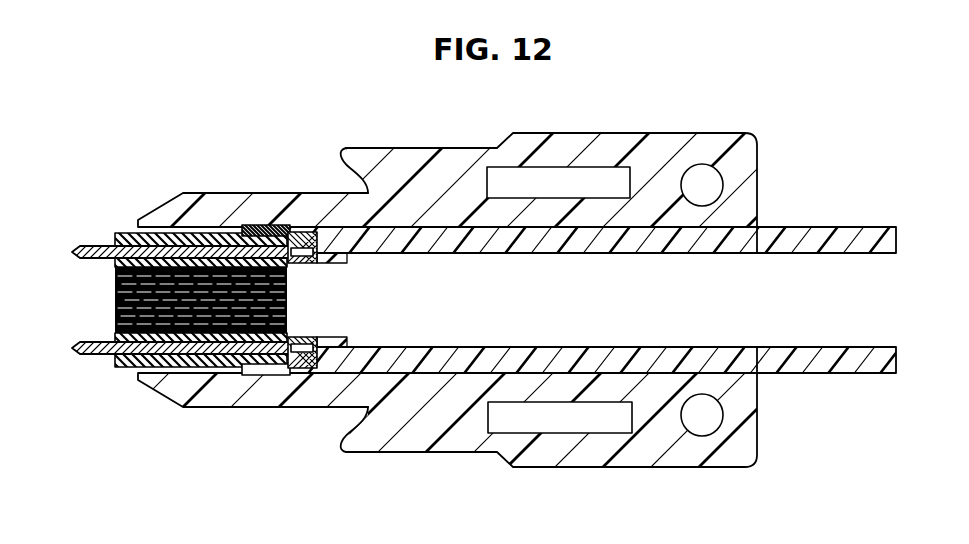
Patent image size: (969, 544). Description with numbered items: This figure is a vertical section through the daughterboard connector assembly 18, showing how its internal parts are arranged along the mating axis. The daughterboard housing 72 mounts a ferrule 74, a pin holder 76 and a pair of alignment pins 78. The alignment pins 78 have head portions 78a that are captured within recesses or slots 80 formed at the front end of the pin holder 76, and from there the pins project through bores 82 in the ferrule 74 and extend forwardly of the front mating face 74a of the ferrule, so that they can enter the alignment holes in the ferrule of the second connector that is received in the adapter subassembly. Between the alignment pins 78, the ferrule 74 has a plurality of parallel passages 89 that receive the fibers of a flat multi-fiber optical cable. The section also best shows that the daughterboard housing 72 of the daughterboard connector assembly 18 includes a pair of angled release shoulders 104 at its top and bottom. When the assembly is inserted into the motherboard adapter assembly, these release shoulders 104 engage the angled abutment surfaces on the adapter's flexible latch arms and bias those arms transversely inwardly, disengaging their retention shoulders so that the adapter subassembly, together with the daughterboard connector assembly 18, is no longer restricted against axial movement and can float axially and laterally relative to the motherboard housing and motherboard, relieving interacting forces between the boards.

The daughterboard connector assembly 18 is at (637, 126).
The daughterboard housing 72 is at (635, 457).
The ferrule 74 is at (158, 236).
The front mating face 74a is at (115, 320).
The pin holder 76 is at (765, 238).
The alignment pins 78 is at (207, 237).
The head portions 78a is at (305, 348).
The recesses or slots 80 is at (306, 262).
The bores 82 is at (232, 235).
The parallel passages 89 is at (115, 315).
The release shoulders 104 is at (340, 151).